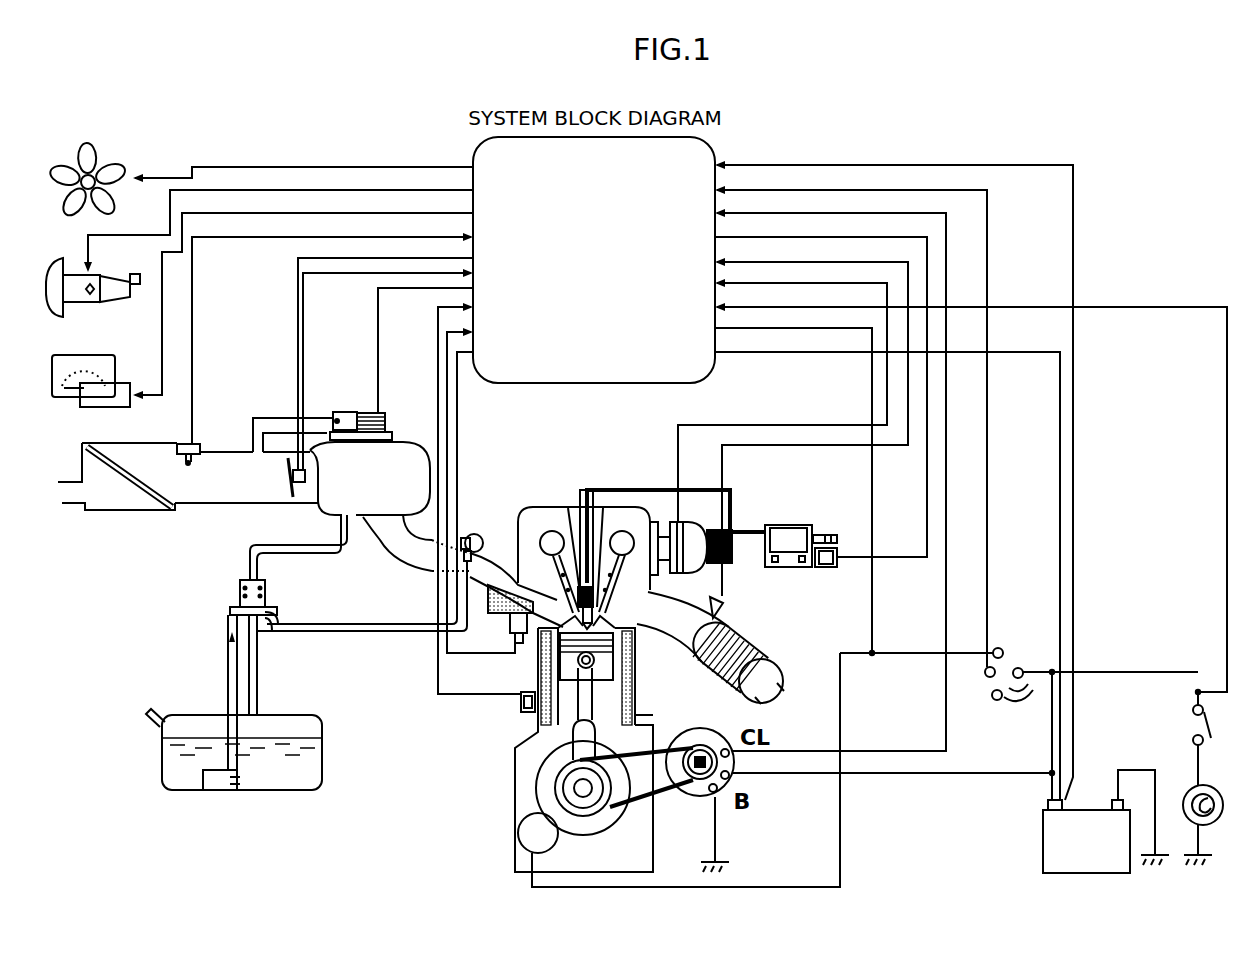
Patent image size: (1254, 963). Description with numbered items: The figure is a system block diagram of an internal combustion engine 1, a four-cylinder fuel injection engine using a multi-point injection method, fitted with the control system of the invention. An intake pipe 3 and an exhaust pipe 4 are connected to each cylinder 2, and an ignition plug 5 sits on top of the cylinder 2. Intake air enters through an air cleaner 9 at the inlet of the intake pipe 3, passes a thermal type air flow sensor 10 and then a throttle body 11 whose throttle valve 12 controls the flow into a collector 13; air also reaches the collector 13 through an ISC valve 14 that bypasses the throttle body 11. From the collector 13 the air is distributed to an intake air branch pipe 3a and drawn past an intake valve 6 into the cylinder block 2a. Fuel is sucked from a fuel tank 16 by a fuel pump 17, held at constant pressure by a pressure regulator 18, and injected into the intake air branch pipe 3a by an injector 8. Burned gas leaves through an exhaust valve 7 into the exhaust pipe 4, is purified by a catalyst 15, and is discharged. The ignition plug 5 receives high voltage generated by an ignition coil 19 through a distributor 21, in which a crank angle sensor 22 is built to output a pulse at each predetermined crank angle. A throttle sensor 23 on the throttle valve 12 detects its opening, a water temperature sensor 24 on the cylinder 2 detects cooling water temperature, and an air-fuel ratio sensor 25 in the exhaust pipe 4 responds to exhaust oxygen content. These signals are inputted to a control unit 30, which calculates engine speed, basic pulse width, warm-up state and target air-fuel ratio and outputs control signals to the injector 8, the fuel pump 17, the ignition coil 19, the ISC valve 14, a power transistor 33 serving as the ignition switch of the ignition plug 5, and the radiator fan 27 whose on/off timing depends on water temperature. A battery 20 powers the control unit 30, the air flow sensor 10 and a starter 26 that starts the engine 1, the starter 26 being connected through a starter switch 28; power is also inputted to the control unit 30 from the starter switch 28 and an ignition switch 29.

The internal combustion engine 1 is at (775, 413).
The cylinder 2 is at (515, 790).
The cylinder block 2a is at (638, 714).
The intake pipe 3 is at (243, 503).
The intake air branch pipe 3a is at (410, 573).
The exhaust pipe 4 is at (672, 640).
The ignition plug 5 is at (579, 545).
The intake valve 6 is at (497, 604).
The exhaust valve 7 is at (647, 590).
The injector 8 is at (480, 530).
The air cleaner 9 is at (127, 512).
The thermal type air flow sensor 10 is at (197, 442).
The throttle body 11 is at (302, 512).
The throttle valve 12 is at (290, 472).
The collector 13 is at (405, 441).
The ISC valve 14 is at (340, 410).
The catalyst 15 is at (786, 642).
The fuel tank 16 is at (323, 750).
The fuel pump 17 is at (222, 792).
The pressure regulator 18 is at (233, 612).
The ignition coil 19 is at (790, 522).
The battery 20 is at (1043, 843).
The distributor 21 is at (700, 518).
The crank angle sensor 22 is at (660, 518).
The throttle sensor 23 is at (307, 475).
The water temperature sensor 24 is at (521, 704).
The air-fuel ratio sensor 25 is at (723, 601).
The starter 26 is at (518, 838).
The radiator fan 27 is at (117, 196).
The starter switch 28 is at (1003, 651).
The ignition switch 29 is at (992, 696).
The control unit 30 is at (592, 390).
The power transistor 33 is at (830, 568).